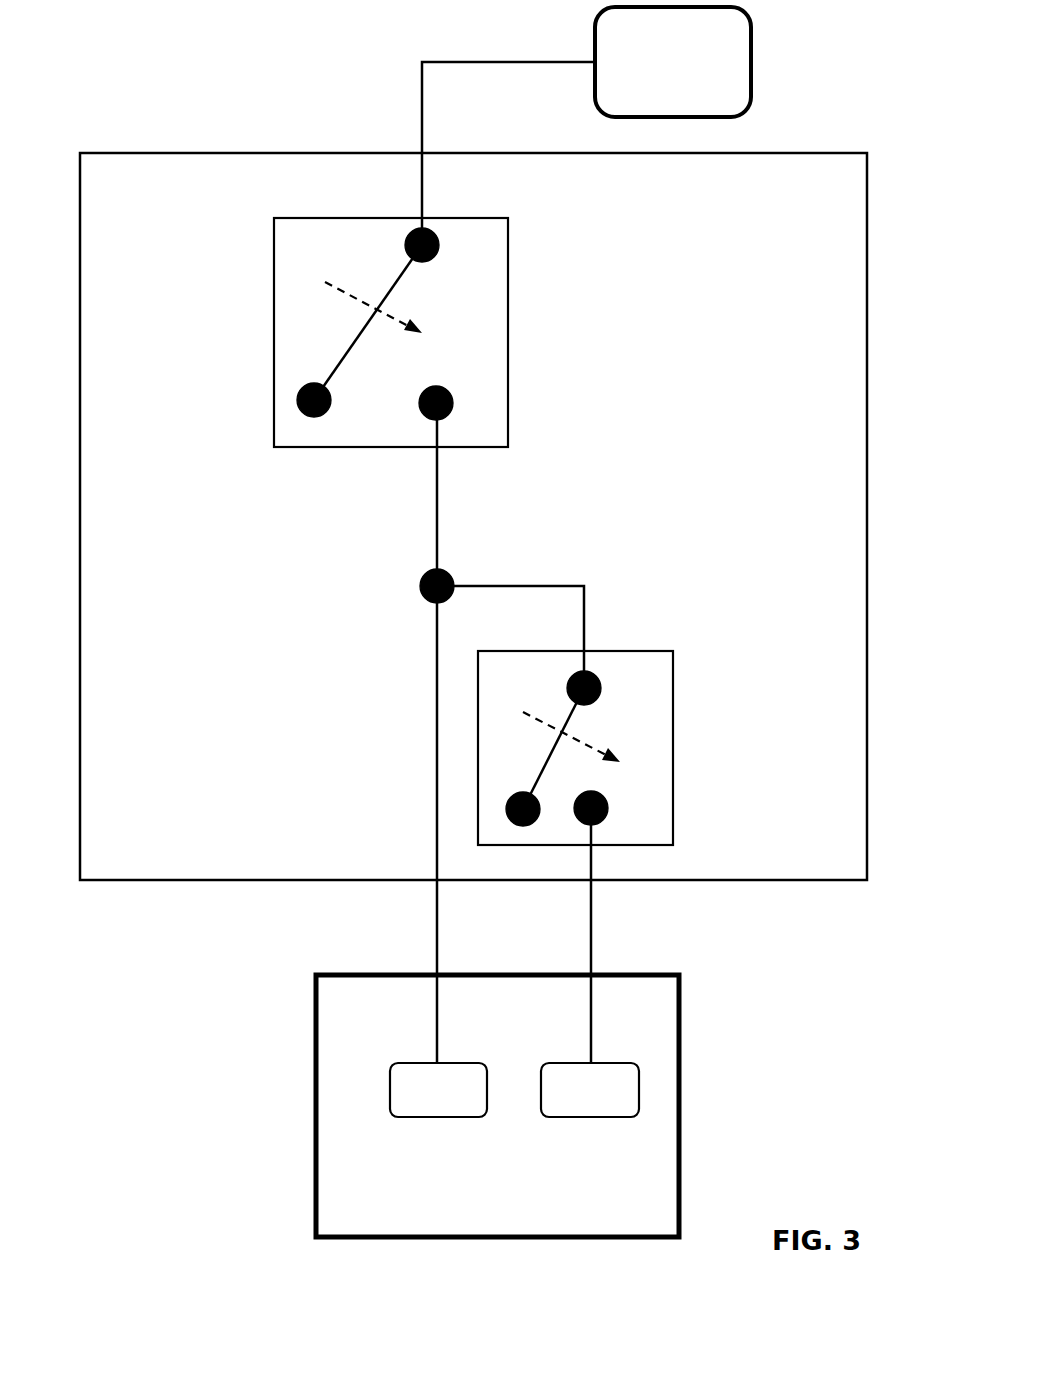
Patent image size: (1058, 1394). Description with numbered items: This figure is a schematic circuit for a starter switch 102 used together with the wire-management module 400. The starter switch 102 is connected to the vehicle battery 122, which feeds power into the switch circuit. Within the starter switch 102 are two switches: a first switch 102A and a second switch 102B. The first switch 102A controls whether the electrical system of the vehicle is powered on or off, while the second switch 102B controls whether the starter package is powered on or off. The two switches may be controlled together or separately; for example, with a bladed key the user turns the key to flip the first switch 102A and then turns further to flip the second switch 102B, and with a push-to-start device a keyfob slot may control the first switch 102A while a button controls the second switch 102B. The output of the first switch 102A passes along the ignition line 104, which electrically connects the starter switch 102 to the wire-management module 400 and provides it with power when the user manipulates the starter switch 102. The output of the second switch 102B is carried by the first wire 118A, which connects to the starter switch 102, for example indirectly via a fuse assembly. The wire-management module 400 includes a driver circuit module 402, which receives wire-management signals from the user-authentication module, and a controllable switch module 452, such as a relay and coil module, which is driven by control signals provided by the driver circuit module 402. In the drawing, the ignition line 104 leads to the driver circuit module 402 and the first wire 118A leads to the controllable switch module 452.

The vehicle battery 122 is at (586, 117).
The starter switch 102 is at (473, 516).
The first switch 102A is at (275, 375).
The second switch 102B is at (675, 712).
The ignition line 104 is at (440, 918).
The first wire 118A is at (592, 956).
The wire-management module 400 is at (497, 1106).
The driver circuit module 402 is at (438, 1090).
The controllable switch module 452 is at (590, 1090).